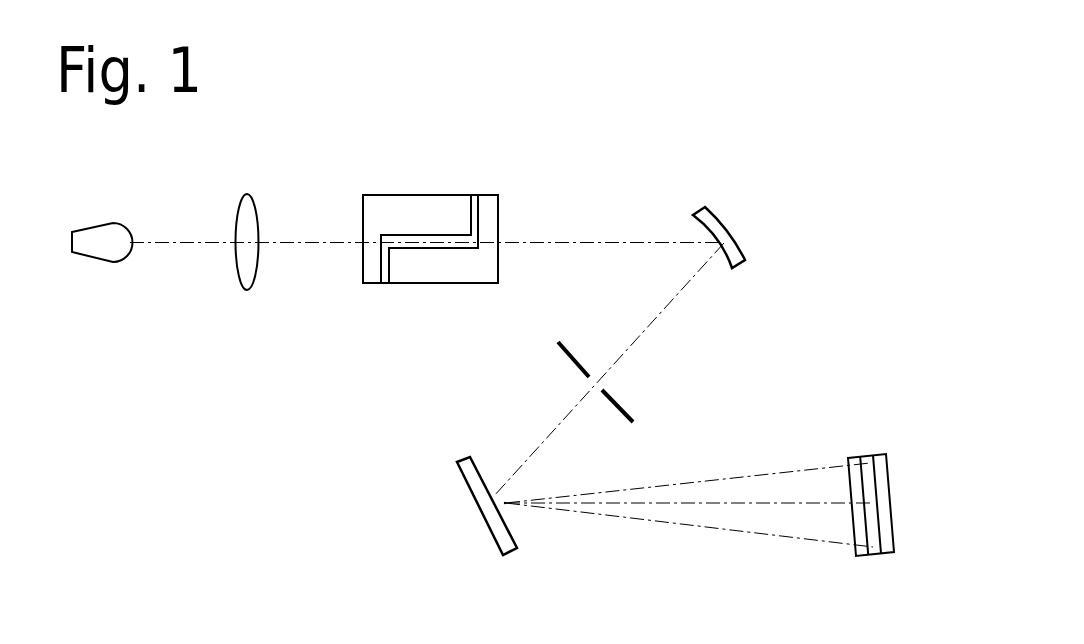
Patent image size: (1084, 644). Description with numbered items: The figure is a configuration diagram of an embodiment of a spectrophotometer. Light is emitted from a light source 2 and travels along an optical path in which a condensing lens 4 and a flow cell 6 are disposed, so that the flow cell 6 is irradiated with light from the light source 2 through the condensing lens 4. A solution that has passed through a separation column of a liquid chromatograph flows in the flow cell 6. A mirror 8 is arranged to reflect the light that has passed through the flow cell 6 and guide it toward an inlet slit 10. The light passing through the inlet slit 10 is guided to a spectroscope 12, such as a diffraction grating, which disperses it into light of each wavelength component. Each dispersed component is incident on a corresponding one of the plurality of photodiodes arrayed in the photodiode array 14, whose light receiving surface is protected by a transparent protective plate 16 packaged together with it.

The light source 2 is at (105, 225).
The condensing lens 4 is at (252, 200).
The flow cell 6 is at (421, 195).
The mirror 8 is at (732, 242).
The inlet slit 10 is at (622, 402).
The spectroscope 12 is at (488, 523).
The photodiode array 14 is at (892, 523).
The protective plate 16 is at (855, 520).